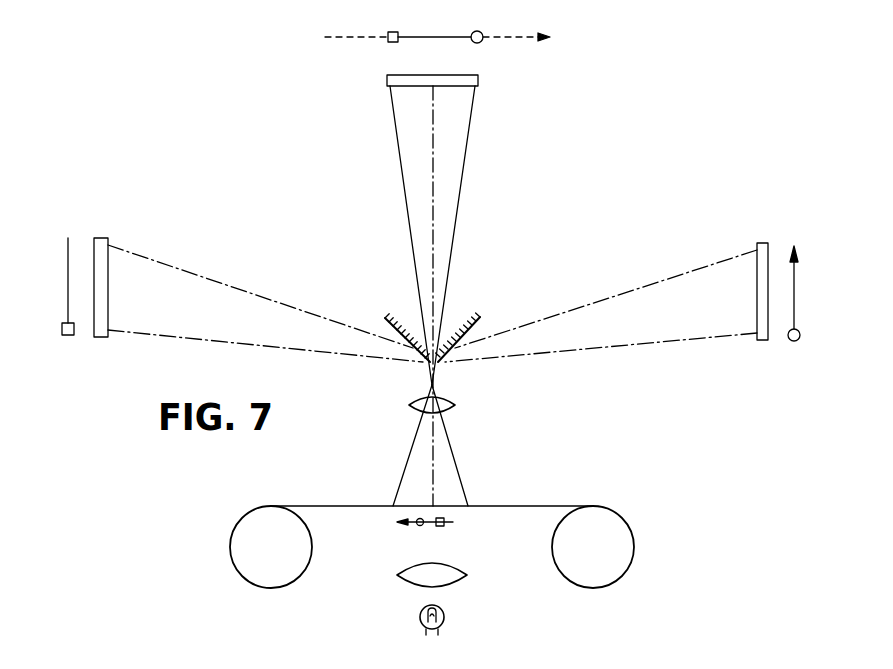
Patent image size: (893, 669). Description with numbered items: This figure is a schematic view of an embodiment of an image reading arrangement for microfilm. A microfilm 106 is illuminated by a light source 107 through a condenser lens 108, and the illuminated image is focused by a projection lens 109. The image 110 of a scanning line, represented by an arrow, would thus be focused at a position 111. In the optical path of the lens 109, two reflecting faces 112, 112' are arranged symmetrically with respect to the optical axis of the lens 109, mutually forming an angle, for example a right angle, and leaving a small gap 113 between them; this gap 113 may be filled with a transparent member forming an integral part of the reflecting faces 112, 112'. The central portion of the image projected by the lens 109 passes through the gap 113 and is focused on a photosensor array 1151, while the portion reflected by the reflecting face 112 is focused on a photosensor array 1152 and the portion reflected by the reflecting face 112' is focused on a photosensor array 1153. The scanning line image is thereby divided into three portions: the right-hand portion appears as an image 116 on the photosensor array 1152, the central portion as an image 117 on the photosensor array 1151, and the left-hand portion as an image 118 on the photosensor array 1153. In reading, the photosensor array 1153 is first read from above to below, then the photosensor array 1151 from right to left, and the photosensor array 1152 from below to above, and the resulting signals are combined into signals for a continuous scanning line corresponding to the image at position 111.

The microfilm 106 is at (372, 505).
The light source 107 is at (444, 613).
The condenser lens 108 is at (467, 570).
The projection lens 109 is at (450, 410).
The image of a scanning line 110 is at (455, 522).
The position of focused image 111 is at (360, 41).
The reflecting face 112 is at (384, 323).
The reflecting face 112' is at (480, 319).
The gap 113 is at (436, 367).
The photosensor array 1151 is at (478, 80).
The photosensor array 1152 is at (105, 339).
The photosensor array 1153 is at (761, 342).
The image 116 is at (68, 262).
The image 117 is at (445, 41).
The image 118 is at (794, 270).